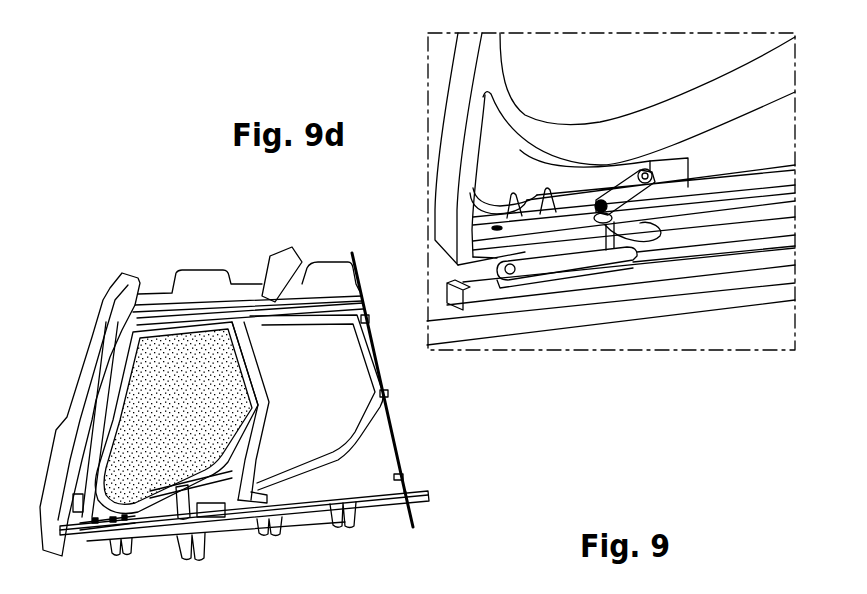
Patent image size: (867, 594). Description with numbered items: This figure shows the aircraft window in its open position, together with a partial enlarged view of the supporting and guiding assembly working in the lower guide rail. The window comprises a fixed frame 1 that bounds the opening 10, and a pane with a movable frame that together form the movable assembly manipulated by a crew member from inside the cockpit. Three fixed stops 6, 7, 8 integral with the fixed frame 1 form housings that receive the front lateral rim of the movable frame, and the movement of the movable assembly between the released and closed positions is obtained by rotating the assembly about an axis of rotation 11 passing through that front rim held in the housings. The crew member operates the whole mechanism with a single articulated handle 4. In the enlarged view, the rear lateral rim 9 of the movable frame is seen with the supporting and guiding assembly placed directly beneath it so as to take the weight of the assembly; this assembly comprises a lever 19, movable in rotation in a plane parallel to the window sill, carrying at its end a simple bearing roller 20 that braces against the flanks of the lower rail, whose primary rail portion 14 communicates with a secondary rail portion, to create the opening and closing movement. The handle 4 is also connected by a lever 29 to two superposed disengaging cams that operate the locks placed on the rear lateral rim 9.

The fixed frame 1 is at (78, 393).
The handle 4 is at (176, 504).
The fixed stop 6 is at (369, 318).
The fixed stop 7 is at (388, 394).
The fixed stop 8 is at (404, 478).
The opening 10 is at (290, 416).
The axis of rotation 11 is at (416, 523).
The rear lateral rim 9 is at (443, 188).
The primary rail portion 14 is at (673, 262).
The lever 19 is at (560, 260).
The bearing roller 20 is at (507, 298).
The lever 29 is at (730, 192).